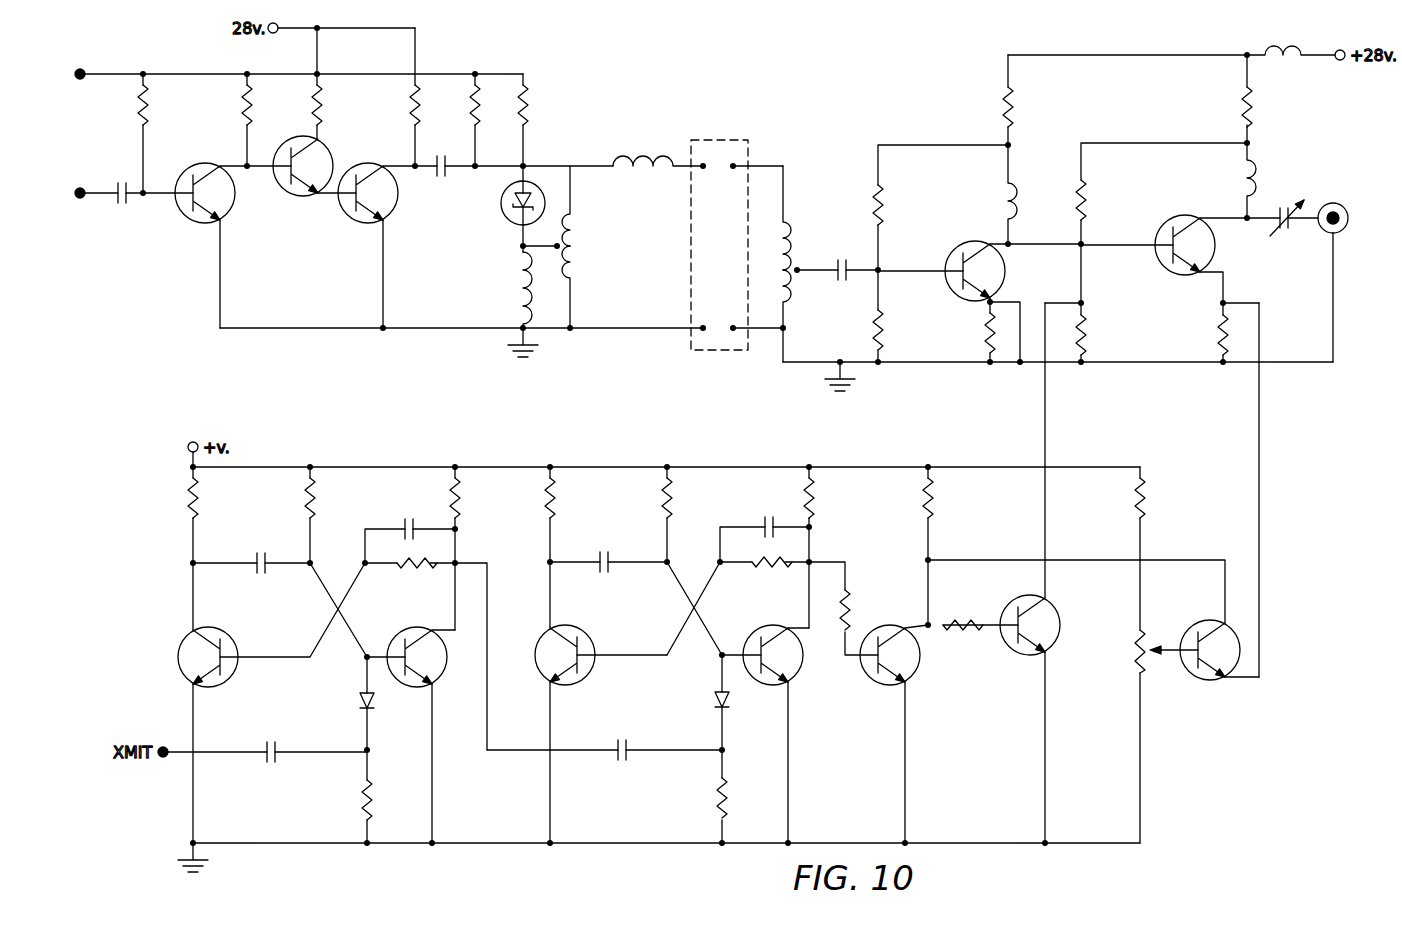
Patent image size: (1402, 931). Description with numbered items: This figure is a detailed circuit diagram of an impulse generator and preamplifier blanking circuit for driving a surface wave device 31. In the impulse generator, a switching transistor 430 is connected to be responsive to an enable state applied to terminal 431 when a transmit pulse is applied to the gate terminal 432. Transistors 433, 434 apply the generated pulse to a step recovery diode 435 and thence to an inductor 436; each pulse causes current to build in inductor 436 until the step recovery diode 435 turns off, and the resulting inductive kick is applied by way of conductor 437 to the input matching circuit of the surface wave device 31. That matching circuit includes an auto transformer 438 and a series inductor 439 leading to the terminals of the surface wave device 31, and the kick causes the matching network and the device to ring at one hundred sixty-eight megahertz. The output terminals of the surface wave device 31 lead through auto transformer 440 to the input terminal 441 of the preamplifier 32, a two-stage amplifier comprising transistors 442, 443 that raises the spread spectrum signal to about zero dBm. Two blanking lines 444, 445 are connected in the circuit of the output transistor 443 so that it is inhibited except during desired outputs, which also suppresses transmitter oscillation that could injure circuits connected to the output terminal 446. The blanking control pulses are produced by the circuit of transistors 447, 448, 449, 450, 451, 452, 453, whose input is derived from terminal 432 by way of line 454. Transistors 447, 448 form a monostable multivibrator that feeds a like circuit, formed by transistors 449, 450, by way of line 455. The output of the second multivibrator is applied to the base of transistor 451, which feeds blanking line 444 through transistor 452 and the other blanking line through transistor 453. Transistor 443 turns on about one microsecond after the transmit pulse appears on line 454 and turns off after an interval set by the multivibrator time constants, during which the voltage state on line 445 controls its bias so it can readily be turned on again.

The surface wave device 31 is at (748, 146).
The preamplifier 32 is at (1166, 51).
The switching transistor 430 is at (217, 245).
The terminal 431 is at (83, 77).
The gate terminal 432 is at (109, 186).
The transistor 433 is at (326, 170).
The transistor 434 is at (387, 245).
The step recovery diode 435 is at (505, 207).
The inductor 436 is at (520, 280).
The conductor 437 is at (557, 248).
The auto transformer 438 is at (561, 259).
The series inductor 439 is at (658, 168).
The auto transformer 440 is at (795, 252).
The input terminal 441 is at (798, 282).
The transistor 442 is at (981, 301).
The output transistor 443 is at (1180, 288).
The blanking line 444 is at (1045, 377).
The blanking line 445 is at (1259, 377).
The output terminal 446 is at (1328, 280).
The transistor 447 is at (225, 735).
The transistor 448 is at (421, 735).
The transistor 449 is at (601, 734).
The transistor 450 is at (776, 734).
The transistor 451 is at (904, 734).
The transistor 452 is at (1044, 660).
The transistor 453 is at (1211, 680).
The line 454 is at (206, 752).
The line 455 is at (495, 751).